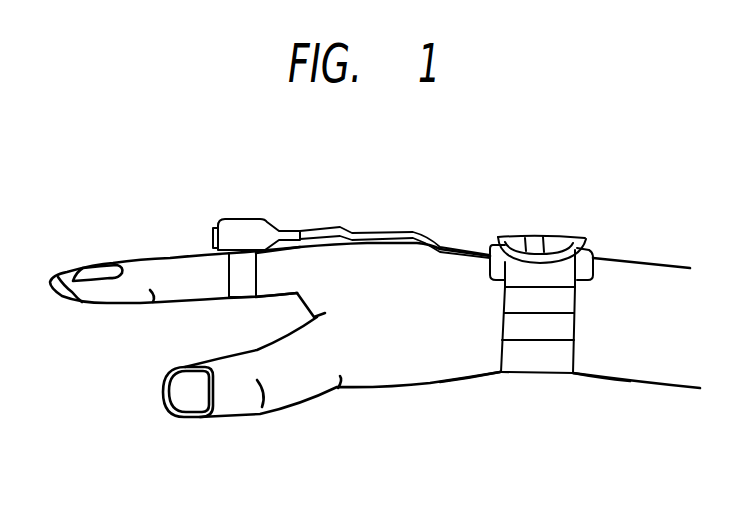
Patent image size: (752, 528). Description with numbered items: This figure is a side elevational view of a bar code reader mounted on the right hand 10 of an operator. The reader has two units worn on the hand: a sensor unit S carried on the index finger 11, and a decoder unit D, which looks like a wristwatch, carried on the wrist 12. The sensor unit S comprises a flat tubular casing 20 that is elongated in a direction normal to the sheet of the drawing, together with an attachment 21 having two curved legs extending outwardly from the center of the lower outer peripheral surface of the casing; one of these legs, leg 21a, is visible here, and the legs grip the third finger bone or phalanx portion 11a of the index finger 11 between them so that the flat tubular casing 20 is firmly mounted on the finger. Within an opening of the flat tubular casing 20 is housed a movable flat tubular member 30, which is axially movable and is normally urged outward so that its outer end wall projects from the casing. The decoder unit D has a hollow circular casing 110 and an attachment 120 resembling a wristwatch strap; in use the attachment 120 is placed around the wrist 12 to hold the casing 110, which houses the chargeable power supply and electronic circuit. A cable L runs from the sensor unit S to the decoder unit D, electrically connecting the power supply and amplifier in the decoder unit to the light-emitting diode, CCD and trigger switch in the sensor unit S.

The right hand 10 is at (402, 400).
The index finger 11 is at (130, 305).
The third finger bone portion 11a is at (263, 280).
The wrist 12 is at (481, 353).
The flat tubular casing 20 is at (231, 218).
The attachment 21 is at (250, 268).
The curved leg 21a is at (228, 280).
The movable flat tubular member 30 is at (212, 236).
The hollow circular casing 110 is at (553, 240).
The attachment 120 is at (557, 360).
The sensor unit S is at (239, 238).
The cable L is at (422, 241).
The decoder unit D is at (552, 300).